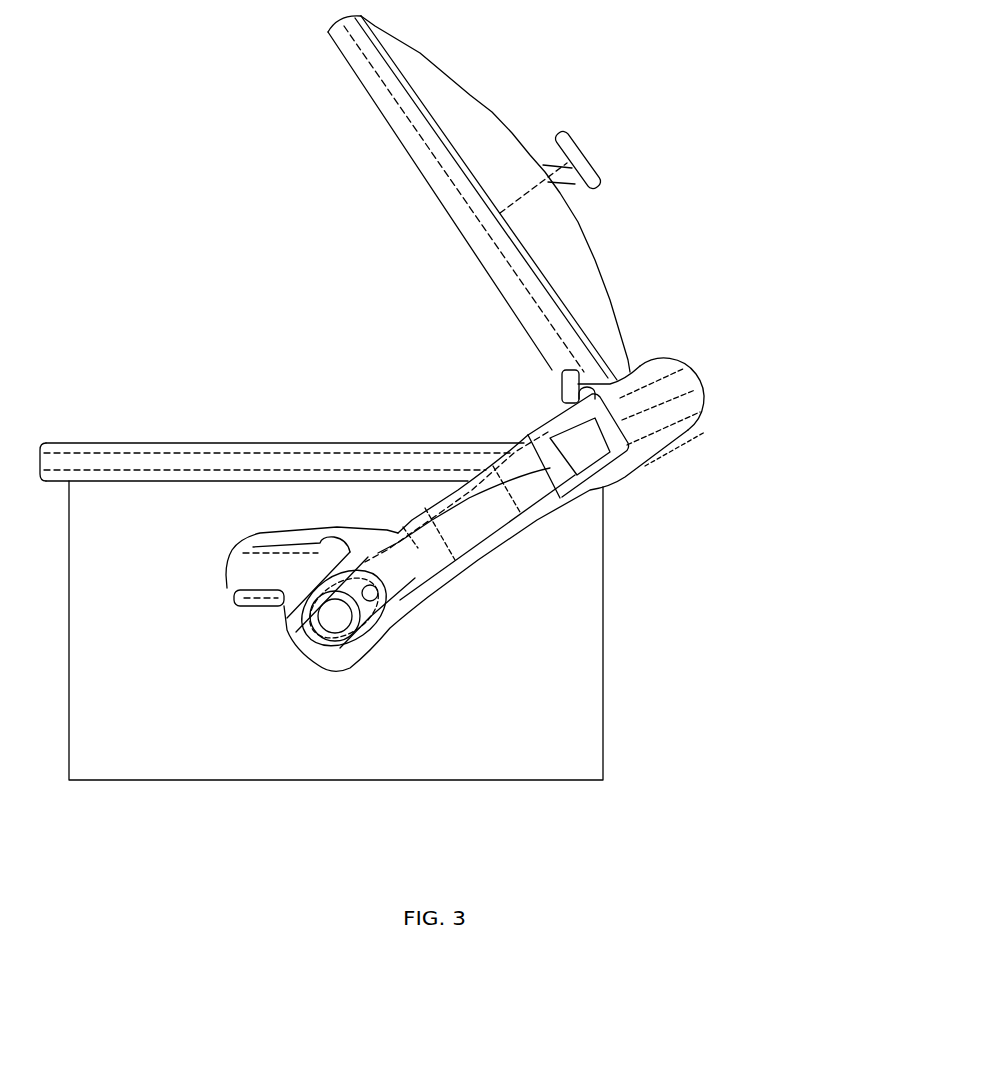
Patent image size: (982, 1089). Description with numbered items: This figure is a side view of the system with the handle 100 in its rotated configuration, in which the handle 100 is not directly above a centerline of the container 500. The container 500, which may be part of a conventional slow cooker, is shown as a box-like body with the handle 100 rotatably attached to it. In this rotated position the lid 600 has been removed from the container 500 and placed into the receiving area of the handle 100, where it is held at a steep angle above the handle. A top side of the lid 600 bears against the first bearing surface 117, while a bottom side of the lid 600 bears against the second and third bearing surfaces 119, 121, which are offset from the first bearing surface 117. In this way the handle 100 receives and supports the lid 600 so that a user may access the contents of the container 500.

The handle 100 is at (678, 408).
The first bearing surface 117 is at (632, 372).
The second bearing surface 119 is at (481, 368).
The third bearing surface 121 is at (565, 378).
The container 500 is at (573, 671).
The lid 600 is at (578, 271).